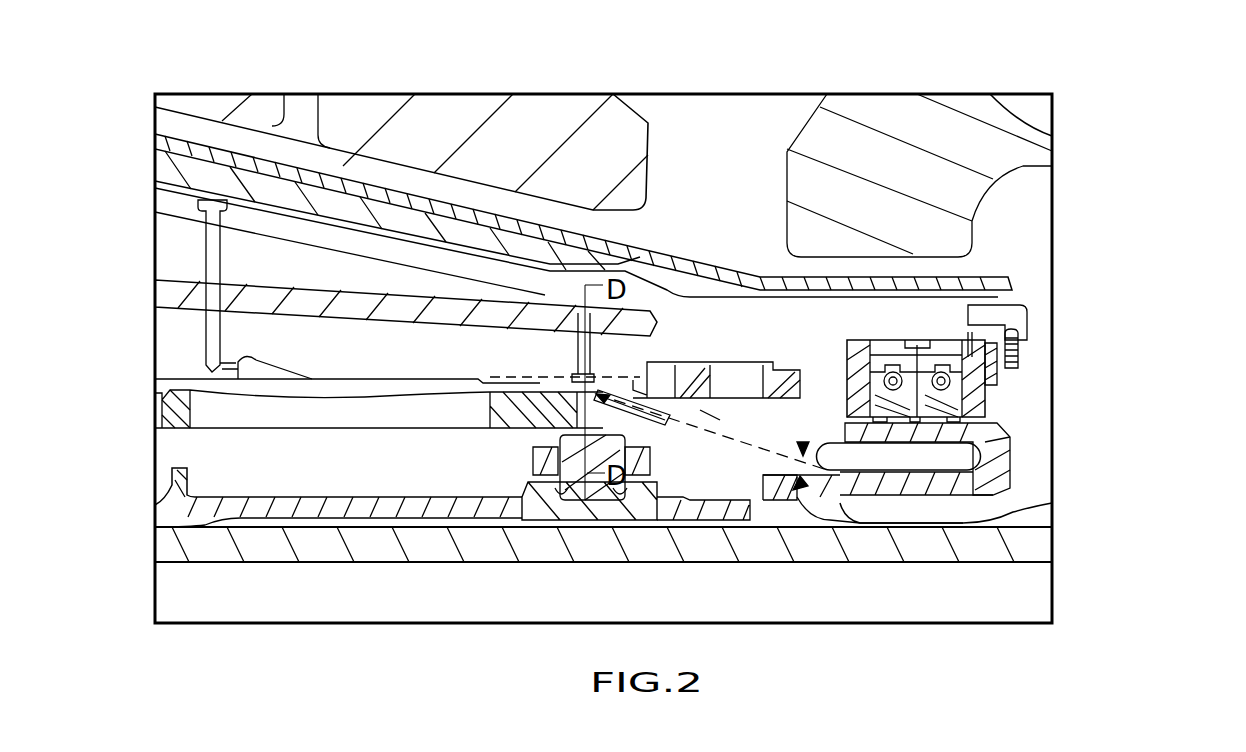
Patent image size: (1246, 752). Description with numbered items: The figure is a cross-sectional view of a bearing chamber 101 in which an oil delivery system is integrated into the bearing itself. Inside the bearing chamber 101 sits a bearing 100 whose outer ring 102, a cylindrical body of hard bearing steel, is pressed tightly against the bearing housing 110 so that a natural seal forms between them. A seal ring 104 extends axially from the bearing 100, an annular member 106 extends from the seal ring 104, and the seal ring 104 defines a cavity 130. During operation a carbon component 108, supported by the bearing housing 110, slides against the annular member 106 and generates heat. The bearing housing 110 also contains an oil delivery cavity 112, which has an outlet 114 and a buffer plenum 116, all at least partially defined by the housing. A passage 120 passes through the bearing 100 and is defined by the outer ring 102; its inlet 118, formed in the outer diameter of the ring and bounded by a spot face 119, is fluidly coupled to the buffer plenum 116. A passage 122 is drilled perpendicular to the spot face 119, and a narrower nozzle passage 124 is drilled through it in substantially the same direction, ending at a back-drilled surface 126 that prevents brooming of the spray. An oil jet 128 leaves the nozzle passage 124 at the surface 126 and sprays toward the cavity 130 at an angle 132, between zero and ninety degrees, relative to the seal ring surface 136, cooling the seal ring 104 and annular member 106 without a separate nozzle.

The bearing 100 is at (550, 510).
The bearing chamber 101 is at (1137, 378).
The outer ring 102 is at (540, 413).
The seal ring 104 is at (970, 452).
The annular member 106 is at (975, 432).
The carbon component 108 is at (987, 388).
The bearing housing 110 is at (925, 313).
The oil delivery cavity 112 is at (610, 320).
The outlet 114 is at (580, 355).
The buffer plenum 116 is at (600, 383).
The inlet 118 is at (593, 395).
The spot face 119 is at (638, 400).
The passage 120 is at (713, 383).
The passage 122 is at (665, 412).
The nozzle passage 124 is at (705, 420).
The surface 126 is at (705, 420).
The oil jet 128 is at (803, 447).
The cavity 130 is at (927, 457).
The angle 132 is at (805, 472).
The seal ring surface 136 is at (847, 475).